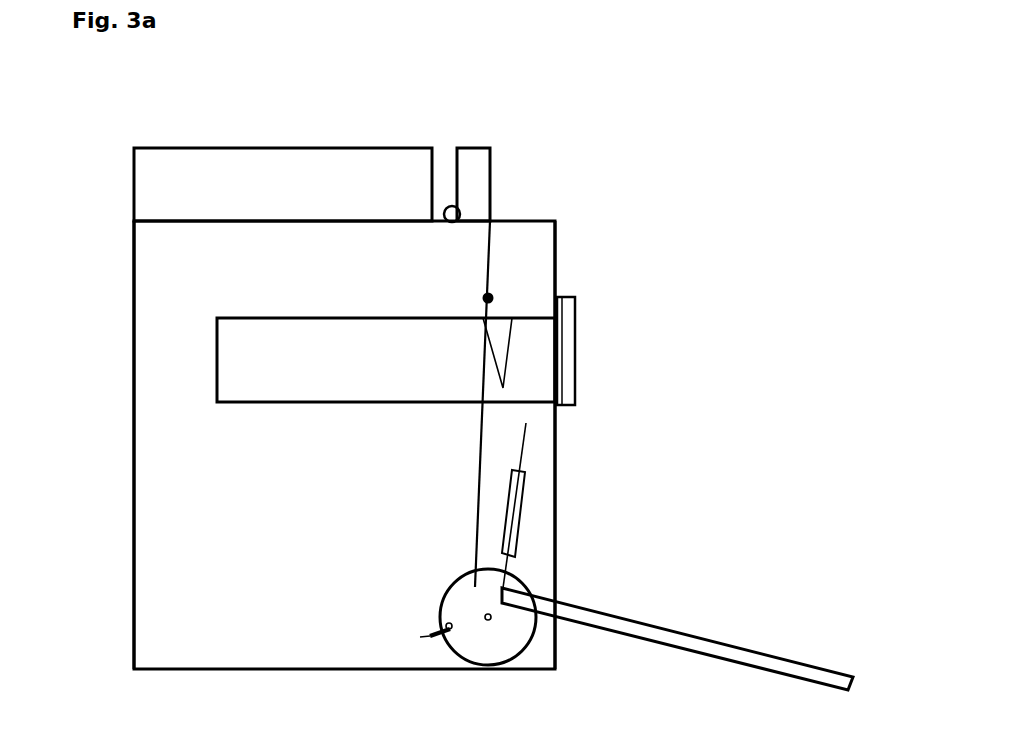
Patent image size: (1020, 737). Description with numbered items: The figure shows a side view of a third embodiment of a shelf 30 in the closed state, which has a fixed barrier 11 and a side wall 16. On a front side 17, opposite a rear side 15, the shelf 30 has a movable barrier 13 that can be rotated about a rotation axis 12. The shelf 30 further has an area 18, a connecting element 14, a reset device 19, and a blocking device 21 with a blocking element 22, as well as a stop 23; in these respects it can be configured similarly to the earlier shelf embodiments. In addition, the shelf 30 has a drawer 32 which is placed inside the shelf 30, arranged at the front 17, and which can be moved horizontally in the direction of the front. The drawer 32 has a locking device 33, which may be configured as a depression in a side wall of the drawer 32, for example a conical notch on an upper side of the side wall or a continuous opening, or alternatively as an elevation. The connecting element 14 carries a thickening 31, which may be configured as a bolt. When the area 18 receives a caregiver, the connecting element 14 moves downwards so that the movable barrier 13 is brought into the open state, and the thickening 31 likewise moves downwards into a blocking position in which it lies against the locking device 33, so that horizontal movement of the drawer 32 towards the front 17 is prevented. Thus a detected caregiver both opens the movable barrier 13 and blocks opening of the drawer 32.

The fixed barrier 11 is at (196, 148).
The rotation axis 12 is at (452, 206).
The movable barrier 13 is at (492, 166).
The connecting element 14 is at (489, 252).
The rear side 15 is at (115, 556).
The side wall 16 is at (133, 370).
The front side 17 is at (568, 521).
The area 18 is at (683, 628).
The reset device 19 is at (531, 465).
The blocking device 21 is at (455, 577).
The blocking element 22 is at (440, 619).
The stop 23 is at (420, 637).
The shelf 30 is at (105, 219).
The thickening 31 is at (500, 297).
The drawer 32 is at (577, 340).
The locking device 33 is at (507, 371).